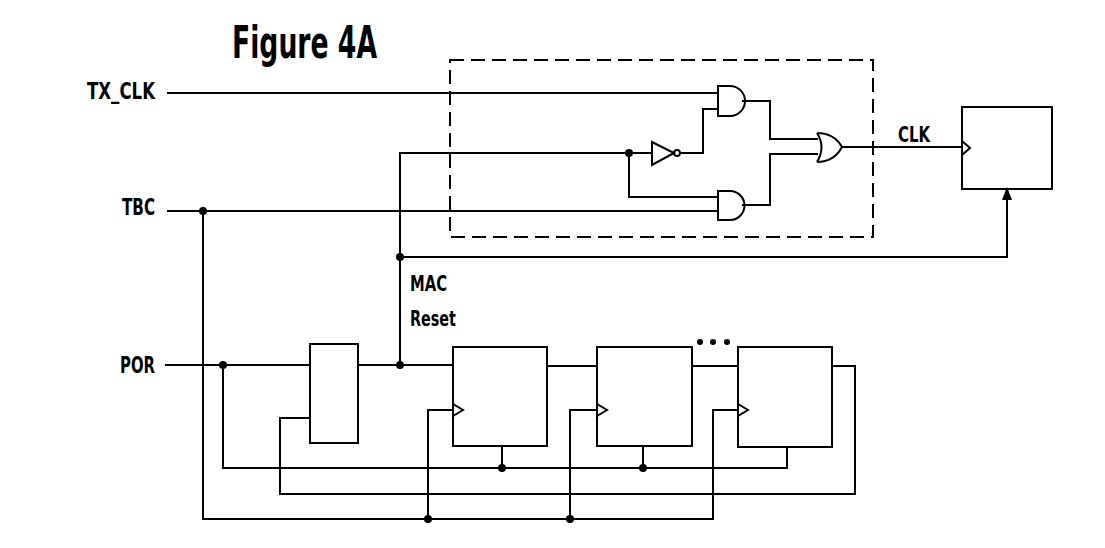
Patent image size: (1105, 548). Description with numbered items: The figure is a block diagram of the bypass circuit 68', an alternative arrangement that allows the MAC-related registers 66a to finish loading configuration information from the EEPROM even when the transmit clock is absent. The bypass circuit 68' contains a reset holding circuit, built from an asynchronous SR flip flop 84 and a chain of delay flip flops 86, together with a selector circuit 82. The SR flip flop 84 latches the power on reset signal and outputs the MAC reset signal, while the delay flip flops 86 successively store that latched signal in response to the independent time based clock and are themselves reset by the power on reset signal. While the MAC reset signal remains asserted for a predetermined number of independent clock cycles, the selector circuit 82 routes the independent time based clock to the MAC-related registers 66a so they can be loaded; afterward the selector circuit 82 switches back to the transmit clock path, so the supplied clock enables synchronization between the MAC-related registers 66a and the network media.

The selector circuit 82 is at (525, 58).
The asynchronous SR flip flop 84 is at (345, 405).
The delay flip flops 86 is at (803, 406).
The MAC-related registers 66a is at (1047, 152).
The bypass circuit 68' is at (980, 335).